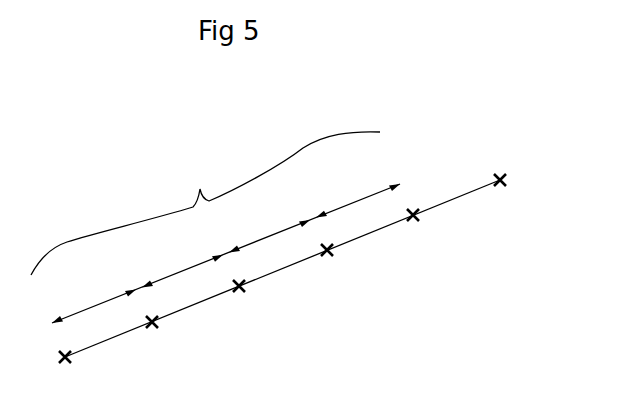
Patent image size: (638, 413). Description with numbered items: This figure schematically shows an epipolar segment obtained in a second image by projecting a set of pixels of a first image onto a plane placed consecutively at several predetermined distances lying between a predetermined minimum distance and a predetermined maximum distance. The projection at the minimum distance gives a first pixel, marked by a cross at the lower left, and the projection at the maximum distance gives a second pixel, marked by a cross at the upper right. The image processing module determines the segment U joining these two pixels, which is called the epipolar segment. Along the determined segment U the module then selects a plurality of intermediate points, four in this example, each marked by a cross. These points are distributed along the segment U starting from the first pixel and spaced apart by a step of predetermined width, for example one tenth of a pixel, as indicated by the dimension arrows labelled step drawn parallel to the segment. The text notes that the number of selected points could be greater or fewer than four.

The epipolar segment U is at (205, 203).
The step of predetermined width step is at (226, 246).